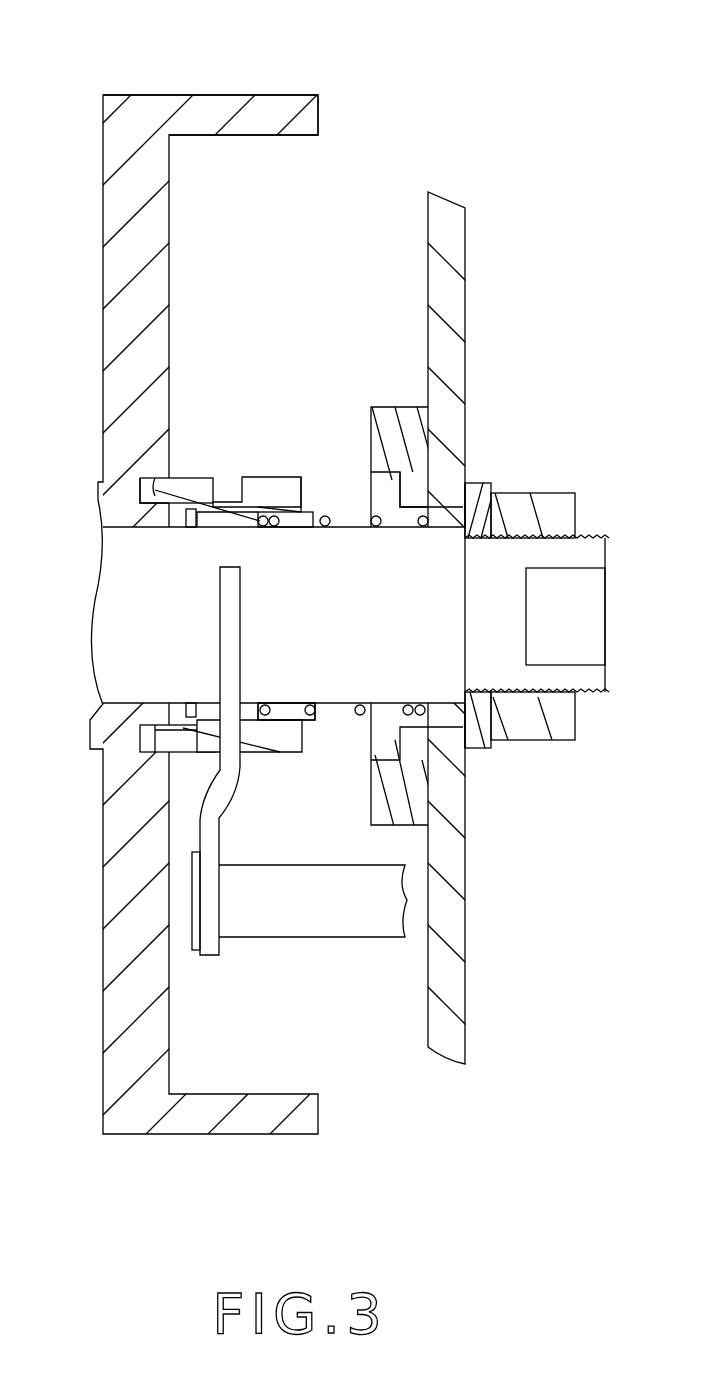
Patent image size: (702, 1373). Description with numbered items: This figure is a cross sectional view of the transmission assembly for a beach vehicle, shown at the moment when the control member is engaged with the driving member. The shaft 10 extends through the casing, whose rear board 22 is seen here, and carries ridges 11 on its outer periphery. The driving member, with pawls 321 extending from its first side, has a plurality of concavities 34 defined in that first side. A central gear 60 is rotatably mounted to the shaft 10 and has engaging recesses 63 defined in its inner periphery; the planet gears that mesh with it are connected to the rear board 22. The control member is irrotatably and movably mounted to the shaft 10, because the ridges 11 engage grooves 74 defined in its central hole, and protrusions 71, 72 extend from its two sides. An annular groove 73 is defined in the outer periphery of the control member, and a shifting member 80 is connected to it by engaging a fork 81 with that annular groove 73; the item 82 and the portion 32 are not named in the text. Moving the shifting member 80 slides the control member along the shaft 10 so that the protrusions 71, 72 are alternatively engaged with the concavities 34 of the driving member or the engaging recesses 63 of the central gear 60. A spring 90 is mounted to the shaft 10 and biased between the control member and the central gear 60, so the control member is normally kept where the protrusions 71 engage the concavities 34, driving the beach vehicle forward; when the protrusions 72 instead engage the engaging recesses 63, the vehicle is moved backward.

The shaft 10 is at (453, 620).
The ridges 11 is at (290, 700).
The rear board 22 is at (462, 374).
The housing wall 32 is at (113, 276).
The pawls 321 is at (290, 106).
The concavities 34 is at (150, 478).
The central gear 60 is at (401, 400).
The engaging recesses 63 is at (393, 497).
The protrusions 71 is at (197, 490).
The protrusions 72 is at (290, 482).
The annular groove 73 is at (233, 487).
The grooves 74 is at (210, 518).
The shifting member 80 is at (238, 853).
The fork 81 is at (242, 642).
The rod 82 is at (327, 915).
The spring 90 is at (325, 512).